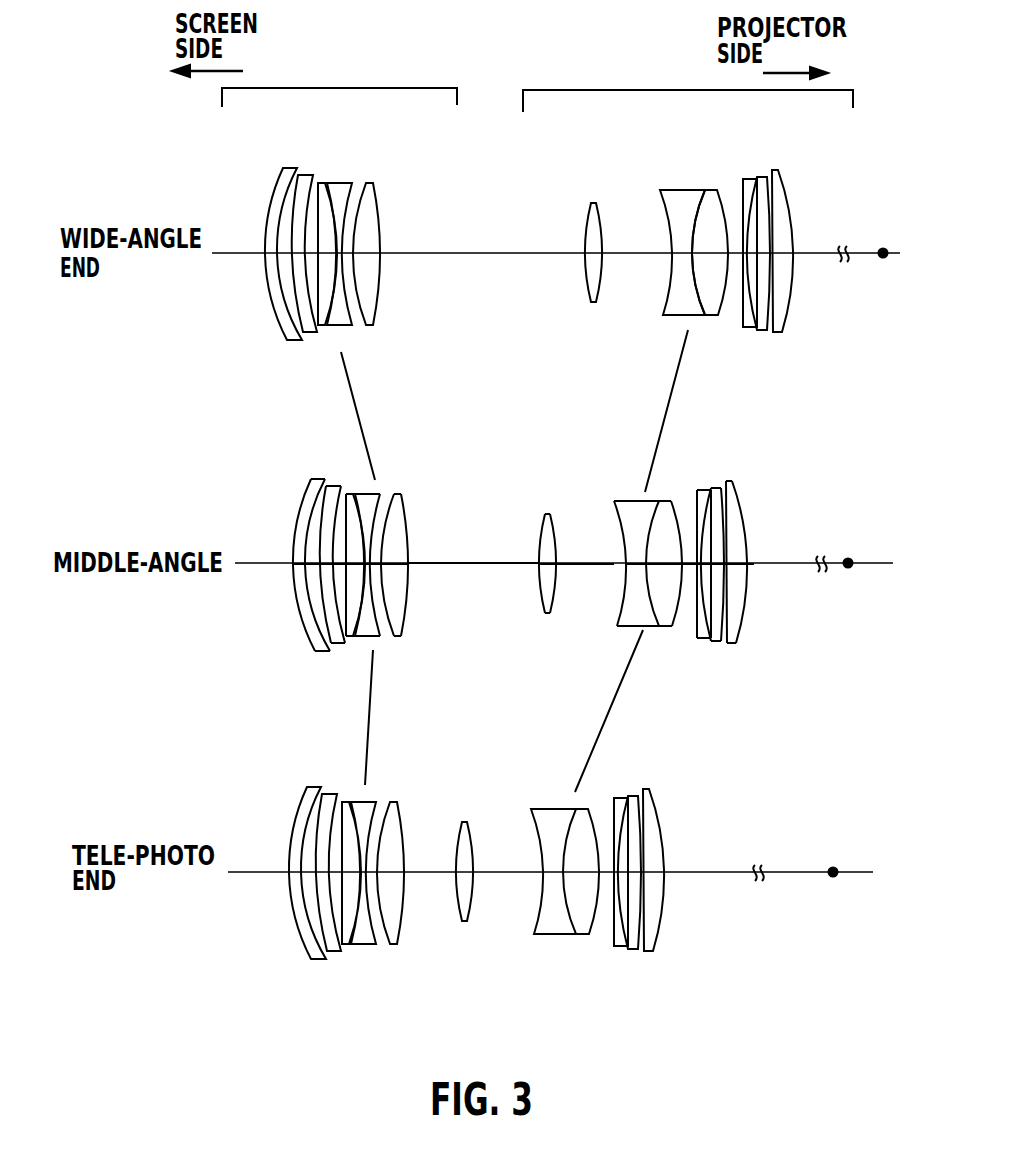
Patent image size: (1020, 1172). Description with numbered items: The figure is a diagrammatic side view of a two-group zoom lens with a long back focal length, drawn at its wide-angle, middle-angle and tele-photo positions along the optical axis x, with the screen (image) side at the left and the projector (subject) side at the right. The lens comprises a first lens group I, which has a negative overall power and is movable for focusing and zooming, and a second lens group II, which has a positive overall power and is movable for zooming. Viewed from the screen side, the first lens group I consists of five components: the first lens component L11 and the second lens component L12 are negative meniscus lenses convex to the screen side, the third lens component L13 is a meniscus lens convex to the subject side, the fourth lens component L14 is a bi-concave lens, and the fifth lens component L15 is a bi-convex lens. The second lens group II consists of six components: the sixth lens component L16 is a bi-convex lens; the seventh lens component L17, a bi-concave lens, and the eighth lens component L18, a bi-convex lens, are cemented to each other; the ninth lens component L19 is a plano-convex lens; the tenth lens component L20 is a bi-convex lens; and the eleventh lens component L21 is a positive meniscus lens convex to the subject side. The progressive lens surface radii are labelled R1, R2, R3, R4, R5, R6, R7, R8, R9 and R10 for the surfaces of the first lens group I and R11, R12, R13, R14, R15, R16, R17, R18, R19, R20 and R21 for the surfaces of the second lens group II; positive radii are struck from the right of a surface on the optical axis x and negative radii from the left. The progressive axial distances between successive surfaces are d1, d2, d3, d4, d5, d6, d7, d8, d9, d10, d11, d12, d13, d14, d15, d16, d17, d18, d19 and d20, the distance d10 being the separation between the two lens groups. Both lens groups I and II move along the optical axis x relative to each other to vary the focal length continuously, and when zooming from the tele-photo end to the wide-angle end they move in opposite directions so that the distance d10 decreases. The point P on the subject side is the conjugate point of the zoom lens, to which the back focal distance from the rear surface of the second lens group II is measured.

The first lens group I is at (339, 80).
The second lens group II is at (688, 84).
The conjugate point P is at (883, 250).
The optical axis x is at (815, 253).
The first lens component L11 is at (290, 178).
The second lens component L12 is at (313, 180).
The third lens component L13 is at (337, 182).
The fourth lens component L14 is at (347, 187).
The fifth lens component L15 is at (373, 190).
The sixth lens component L16 is at (588, 203).
The seventh lens component L17 is at (667, 190).
The eighth lens component L18 is at (710, 203).
The ninth lens component L19 is at (745, 180).
The tenth lens component L20 is at (753, 180).
The eleventh lens component L21 is at (775, 180).
The axial distance d1 is at (292, 553).
The axial distance d2 is at (292, 532).
The axial distance d3 is at (297, 520).
The axial distance d4 is at (330, 527).
The axial distance d5 is at (373, 507).
The axial distance d6 is at (370, 523).
The axial distance d7 is at (380, 537).
The axial distance d8 is at (390, 550).
The axial distance d9 is at (400, 553).
The distance between lens groups d10 is at (467, 563).
The axial distance d11 is at (555, 520).
The axial distance d12 is at (598, 560).
The axial distance d13 is at (632, 553).
The axial distance d14 is at (662, 553).
The axial distance d15 is at (680, 557).
The axial distance d16 is at (705, 540).
The axial distance d17 is at (718, 550).
The axial distance d18 is at (730, 557).
The axial distance d19 is at (748, 557).
The axial distance d20 is at (758, 565).
The lens surface radius R1 is at (292, 587).
The lens surface radius R2 is at (307, 607).
The lens surface radius R3 is at (307, 617).
The lens surface radius R4 is at (332, 633).
The lens surface radius R5 is at (352, 633).
The lens surface radius R6 is at (360, 633).
The lens surface radius R7 is at (377, 633).
The lens surface radius R8 is at (393, 617).
The lens surface radius R9 is at (403, 610).
The lens surface radius R10 is at (410, 587).
The lens surface radius R11 is at (542, 595).
The lens surface radius R12 is at (558, 595).
The lens surface radius R13 is at (622, 578).
The lens surface radius R14 is at (645, 628).
The lens surface radius R15 is at (682, 630).
The lens surface radius R16 is at (687, 633).
The lens surface radius R17 is at (703, 643).
The lens surface radius R18 is at (717, 640).
The lens surface radius R19 is at (733, 635).
The lens surface radius R20 is at (743, 615).
The lens surface radius R21 is at (750, 592).